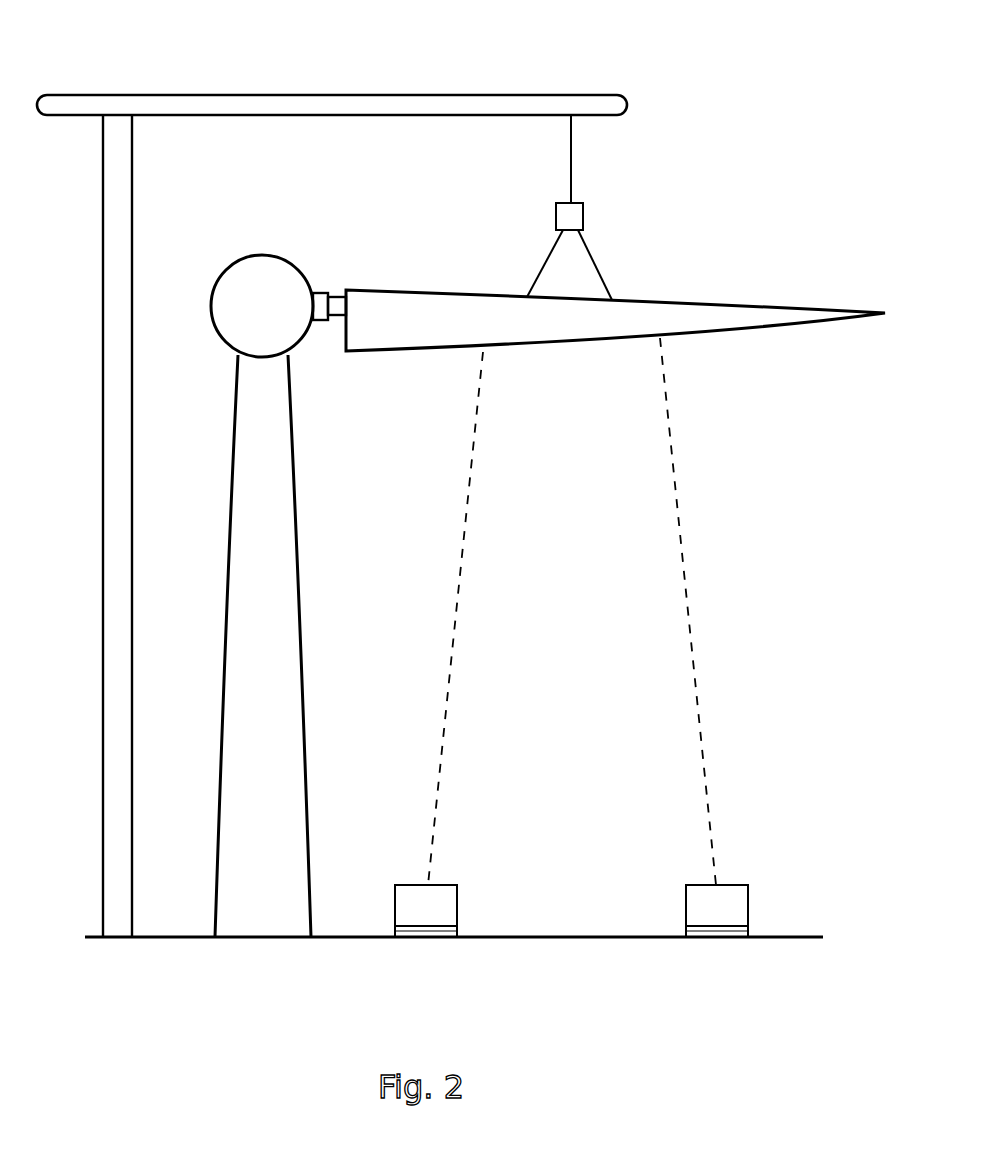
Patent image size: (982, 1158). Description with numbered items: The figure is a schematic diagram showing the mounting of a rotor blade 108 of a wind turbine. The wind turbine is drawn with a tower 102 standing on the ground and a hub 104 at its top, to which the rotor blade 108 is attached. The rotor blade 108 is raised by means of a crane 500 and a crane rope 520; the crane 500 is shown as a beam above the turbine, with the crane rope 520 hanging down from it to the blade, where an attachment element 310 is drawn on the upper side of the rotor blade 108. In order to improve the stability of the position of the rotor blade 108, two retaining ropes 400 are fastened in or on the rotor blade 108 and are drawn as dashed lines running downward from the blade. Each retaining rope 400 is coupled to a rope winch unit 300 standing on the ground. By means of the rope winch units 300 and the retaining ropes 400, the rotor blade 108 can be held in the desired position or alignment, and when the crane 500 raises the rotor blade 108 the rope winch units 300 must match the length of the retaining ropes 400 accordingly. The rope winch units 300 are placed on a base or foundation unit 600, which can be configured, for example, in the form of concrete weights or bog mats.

The tower 102 is at (283, 750).
The hub 104 is at (269, 275).
The rotor blade 108 is at (430, 331).
The rope winch unit 300 is at (448, 900).
The blade-mounted device 310 is at (585, 215).
The retaining rope 400 is at (462, 563).
The crane 500 is at (407, 103).
The crane rope 520 is at (572, 150).
The foundation unit 600 is at (425, 934).